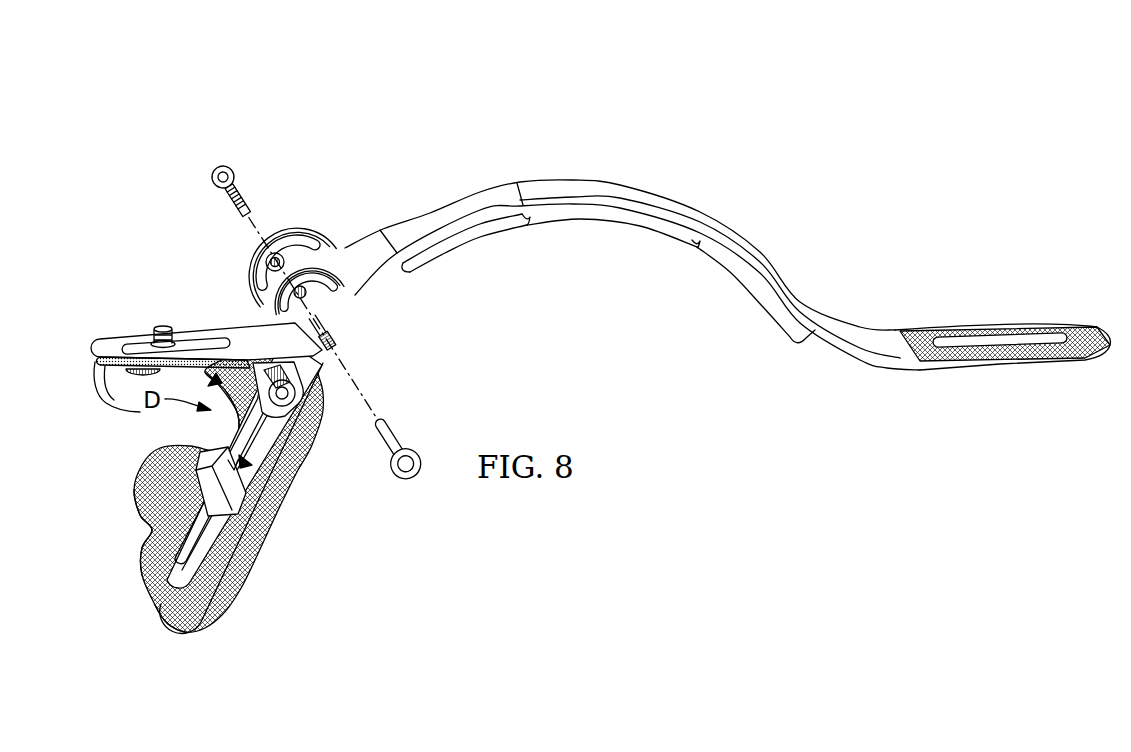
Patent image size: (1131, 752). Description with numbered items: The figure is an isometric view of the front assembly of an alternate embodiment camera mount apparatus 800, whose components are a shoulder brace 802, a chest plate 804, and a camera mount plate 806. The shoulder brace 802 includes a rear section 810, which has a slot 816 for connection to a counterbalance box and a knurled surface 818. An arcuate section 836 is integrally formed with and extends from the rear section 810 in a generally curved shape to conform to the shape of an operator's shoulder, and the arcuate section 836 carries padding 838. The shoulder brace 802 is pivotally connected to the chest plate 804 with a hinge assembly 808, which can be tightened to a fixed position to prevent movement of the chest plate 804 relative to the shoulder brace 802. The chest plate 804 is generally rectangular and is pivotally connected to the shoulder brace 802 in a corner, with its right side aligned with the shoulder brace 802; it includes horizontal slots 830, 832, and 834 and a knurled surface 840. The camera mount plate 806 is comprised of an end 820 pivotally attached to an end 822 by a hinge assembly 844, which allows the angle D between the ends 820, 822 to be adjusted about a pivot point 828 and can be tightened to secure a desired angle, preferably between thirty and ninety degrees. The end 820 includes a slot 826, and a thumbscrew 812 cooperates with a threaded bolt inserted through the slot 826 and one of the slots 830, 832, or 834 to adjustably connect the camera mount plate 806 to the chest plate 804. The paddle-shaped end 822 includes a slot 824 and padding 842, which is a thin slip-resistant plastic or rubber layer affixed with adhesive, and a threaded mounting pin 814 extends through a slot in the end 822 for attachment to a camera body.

The camera mount apparatus 800 is at (666, 82).
The shoulder brace 802 is at (632, 252).
The chest plate 804 is at (195, 638).
The camera mount plate 806 is at (160, 577).
The hinge assembly 808 is at (290, 240).
The rear section 810 is at (1002, 346).
The thumbscrew 812 is at (192, 506).
The threaded mounting pin 814 is at (162, 327).
The slot 816 is at (1000, 338).
The knurled surface 818 is at (1057, 325).
The end 820 is at (228, 590).
The end 822 is at (200, 348).
The slot 824 is at (122, 350).
The slot 826 is at (165, 545).
The pivot point 828 is at (330, 341).
The horizontal slot 830 is at (290, 452).
The horizontal slot 832 is at (200, 420).
The horizontal slot 834 is at (193, 480).
The arcuate section 836 is at (621, 184).
The padding 838 is at (578, 221).
The knurled surface 840 is at (178, 615).
The padding 842 is at (100, 372).
The hinge assembly 844 is at (340, 370).